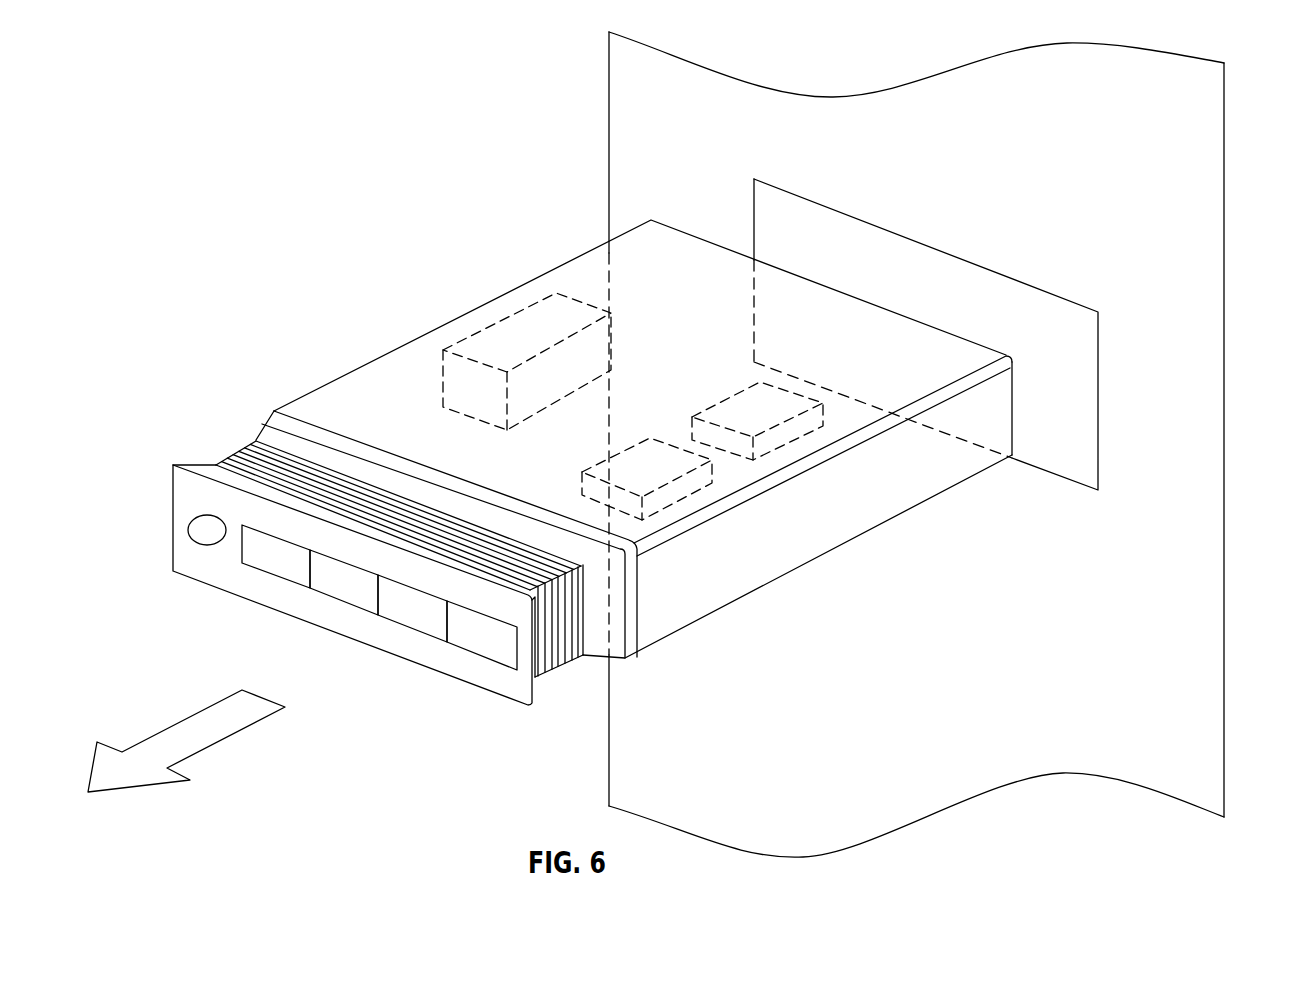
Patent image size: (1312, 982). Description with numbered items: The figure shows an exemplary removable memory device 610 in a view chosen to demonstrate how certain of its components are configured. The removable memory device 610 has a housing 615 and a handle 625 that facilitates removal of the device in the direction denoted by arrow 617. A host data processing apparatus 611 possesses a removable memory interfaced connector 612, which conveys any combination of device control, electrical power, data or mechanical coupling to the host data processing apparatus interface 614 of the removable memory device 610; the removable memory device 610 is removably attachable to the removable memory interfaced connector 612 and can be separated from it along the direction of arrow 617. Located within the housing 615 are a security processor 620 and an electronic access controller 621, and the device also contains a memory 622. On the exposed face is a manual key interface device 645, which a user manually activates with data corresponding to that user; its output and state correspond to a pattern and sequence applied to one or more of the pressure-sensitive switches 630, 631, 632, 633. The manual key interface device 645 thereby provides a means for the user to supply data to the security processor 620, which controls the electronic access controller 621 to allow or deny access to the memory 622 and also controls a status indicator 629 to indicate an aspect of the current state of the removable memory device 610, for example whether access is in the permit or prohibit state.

The removable memory device 610 is at (661, 435).
The host data processing apparatus 611 is at (1195, 113).
The removable memory interfaced connector 612 is at (1050, 292).
The host data processing apparatus interface 614 is at (1012, 413).
The housing 615 is at (920, 507).
The arrow 617 is at (223, 740).
The security processor 620 is at (680, 490).
The electronic access controller 621 is at (793, 437).
The memory 622 is at (505, 317).
The handle 625 is at (223, 462).
The status indicator 629 is at (207, 530).
The pressure-sensitive switch 630 is at (278, 562).
The pressure-sensitive switch 631 is at (345, 588).
The pressure-sensitive switch 632 is at (415, 618).
The pressure-sensitive switch 633 is at (483, 645).
The manual key interface device 645 is at (305, 596).